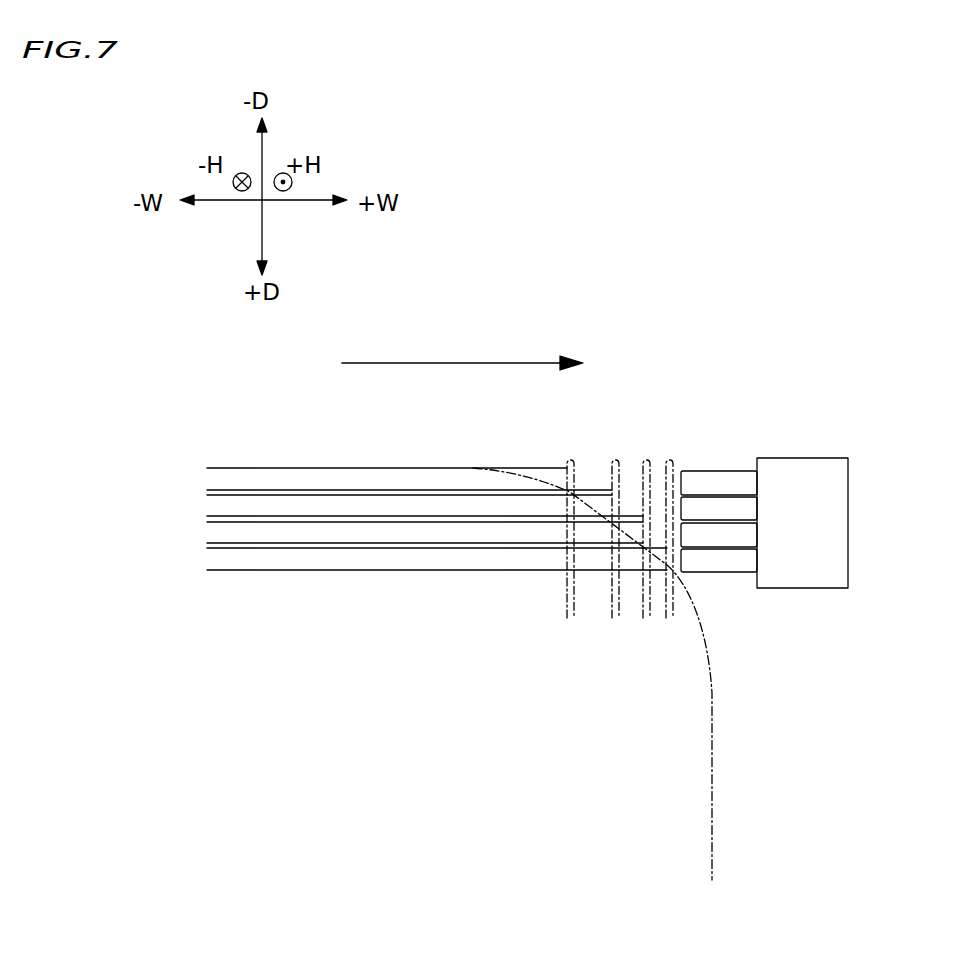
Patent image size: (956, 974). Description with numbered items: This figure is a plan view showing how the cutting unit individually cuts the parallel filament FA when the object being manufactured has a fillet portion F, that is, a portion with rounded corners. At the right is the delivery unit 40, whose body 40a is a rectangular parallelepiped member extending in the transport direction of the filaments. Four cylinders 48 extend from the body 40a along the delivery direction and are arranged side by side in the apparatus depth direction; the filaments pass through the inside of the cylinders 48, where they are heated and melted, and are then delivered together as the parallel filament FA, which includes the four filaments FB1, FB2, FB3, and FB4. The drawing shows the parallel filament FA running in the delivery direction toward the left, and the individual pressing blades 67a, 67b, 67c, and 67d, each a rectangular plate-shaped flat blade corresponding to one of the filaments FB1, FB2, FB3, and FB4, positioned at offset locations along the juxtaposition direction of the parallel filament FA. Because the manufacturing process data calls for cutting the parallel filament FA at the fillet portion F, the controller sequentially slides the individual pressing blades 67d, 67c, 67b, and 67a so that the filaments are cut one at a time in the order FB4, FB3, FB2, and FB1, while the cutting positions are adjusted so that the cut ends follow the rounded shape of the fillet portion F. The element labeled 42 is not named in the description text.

The delivery unit 40 is at (764, 431).
The body 40a is at (812, 472).
The cylinder 48 is at (726, 479).
The terminal holding portion 42 is at (722, 502).
The individual pressing blade 67a is at (672, 605).
The individual pressing blade 67b is at (646, 575).
The individual pressing blade 67c is at (620, 462).
The individual pressing blade 67d is at (570, 462).
The filament FB1 is at (660, 590).
The filament FB2 is at (640, 575).
The filament FB3 is at (600, 476).
The filament FB4 is at (553, 470).
The fillet portion F is at (501, 647).
The parallel filament FA is at (430, 450).